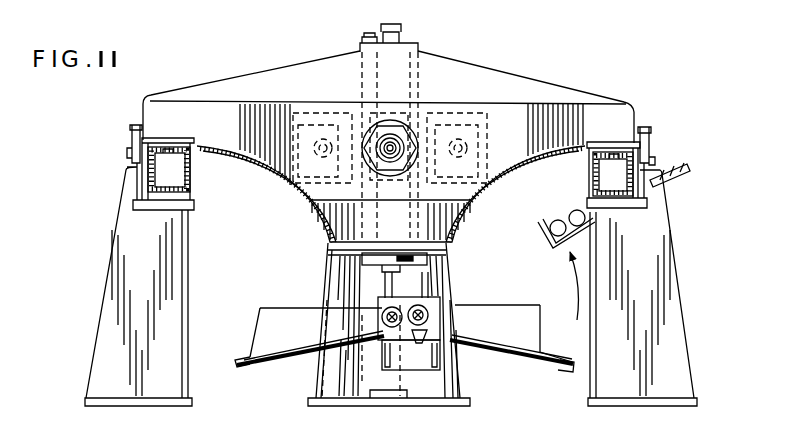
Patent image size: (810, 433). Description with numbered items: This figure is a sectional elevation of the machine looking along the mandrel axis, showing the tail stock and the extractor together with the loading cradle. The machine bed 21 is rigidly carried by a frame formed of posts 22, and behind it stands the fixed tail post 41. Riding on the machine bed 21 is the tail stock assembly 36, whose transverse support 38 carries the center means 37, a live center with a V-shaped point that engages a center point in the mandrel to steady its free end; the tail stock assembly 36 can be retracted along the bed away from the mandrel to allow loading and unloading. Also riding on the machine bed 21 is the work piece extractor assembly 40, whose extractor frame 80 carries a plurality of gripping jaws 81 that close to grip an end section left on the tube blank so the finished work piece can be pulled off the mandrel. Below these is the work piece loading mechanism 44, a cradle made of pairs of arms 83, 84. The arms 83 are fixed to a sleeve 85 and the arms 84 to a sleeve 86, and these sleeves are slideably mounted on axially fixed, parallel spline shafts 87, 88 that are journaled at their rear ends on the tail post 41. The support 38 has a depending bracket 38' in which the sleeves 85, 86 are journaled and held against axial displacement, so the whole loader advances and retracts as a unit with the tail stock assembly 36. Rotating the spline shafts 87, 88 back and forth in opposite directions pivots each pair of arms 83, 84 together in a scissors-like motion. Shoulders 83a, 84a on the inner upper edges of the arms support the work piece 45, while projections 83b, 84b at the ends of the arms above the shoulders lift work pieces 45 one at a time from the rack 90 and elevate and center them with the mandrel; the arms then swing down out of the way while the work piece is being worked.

The machine bed 21 is at (617, 148).
The posts 22 is at (116, 252).
The tail stock assembly 36 is at (590, 90).
The center means 37 is at (392, 148).
The transverse support 38 is at (405, 145).
The depending bracket 38' is at (415, 399).
The work piece extractor assembly 40 is at (447, 97).
The fixed tail post 41 is at (445, 270).
The work piece loading mechanism 44 is at (458, 297).
The work piece 45 is at (568, 210).
The extractor frame 80 is at (224, 108).
The gripping jaws 81 is at (403, 130).
The arms 83 is at (298, 307).
The shoulders 83a is at (260, 310).
The projections 83b is at (252, 362).
The arms 84 is at (520, 333).
The shoulders 84a is at (542, 348).
The projections 84b is at (572, 370).
The sleeve 85 is at (387, 330).
The sleeve 86 is at (452, 343).
The spline shaft 87 is at (393, 317).
The spline shaft 88 is at (433, 320).
The rack 90 is at (688, 172).